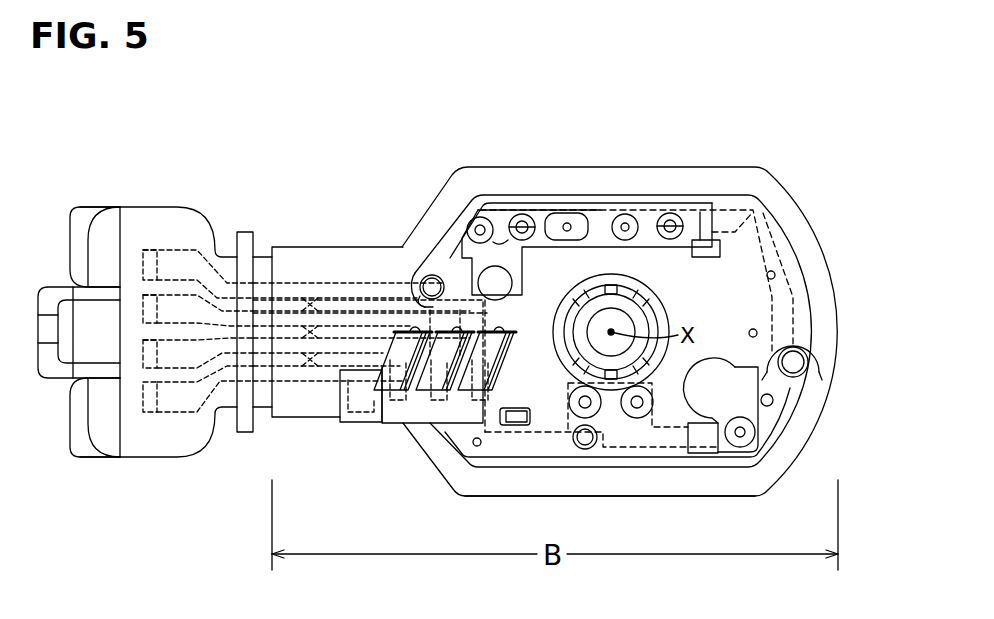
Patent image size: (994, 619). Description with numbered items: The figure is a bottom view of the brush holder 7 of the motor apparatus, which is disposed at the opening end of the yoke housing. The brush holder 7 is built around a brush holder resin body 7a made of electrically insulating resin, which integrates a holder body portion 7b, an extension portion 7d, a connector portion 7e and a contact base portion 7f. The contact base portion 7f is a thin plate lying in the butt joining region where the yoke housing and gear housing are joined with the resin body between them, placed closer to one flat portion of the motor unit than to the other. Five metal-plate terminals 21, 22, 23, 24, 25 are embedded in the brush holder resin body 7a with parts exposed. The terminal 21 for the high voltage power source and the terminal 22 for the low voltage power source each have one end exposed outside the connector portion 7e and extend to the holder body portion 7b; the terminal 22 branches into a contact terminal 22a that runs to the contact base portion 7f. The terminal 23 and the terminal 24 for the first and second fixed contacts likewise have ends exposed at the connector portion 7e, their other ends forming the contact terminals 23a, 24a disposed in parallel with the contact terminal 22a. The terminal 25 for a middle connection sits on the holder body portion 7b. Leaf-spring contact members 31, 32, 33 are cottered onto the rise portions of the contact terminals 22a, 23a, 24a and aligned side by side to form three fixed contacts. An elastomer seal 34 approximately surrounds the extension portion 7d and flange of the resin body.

The brush holder 7 is at (795, 132).
The brush holder resin body 7a is at (650, 257).
The holder body portion 7b is at (600, 267).
The extension portion 7d is at (262, 403).
The connector portion 7e is at (155, 443).
The contact base portion 7f is at (420, 423).
The terminal 21 is at (282, 283).
The terminal 22 is at (330, 310).
The contact terminal 22a is at (438, 428).
The terminal 23 is at (373, 337).
The contact terminal 23a is at (395, 425).
The terminal 24 is at (290, 380).
The contact terminal 24a is at (350, 420).
The terminal 25 is at (760, 228).
The contact member 31 is at (497, 338).
The contact member 32 is at (490, 365).
The contact member 33 is at (385, 338).
The seal 34 is at (575, 484).